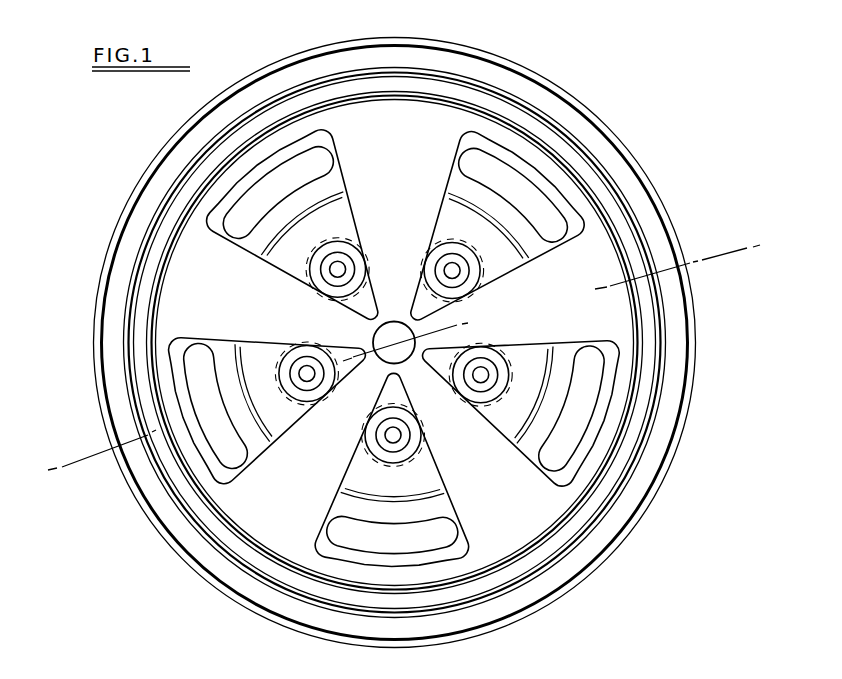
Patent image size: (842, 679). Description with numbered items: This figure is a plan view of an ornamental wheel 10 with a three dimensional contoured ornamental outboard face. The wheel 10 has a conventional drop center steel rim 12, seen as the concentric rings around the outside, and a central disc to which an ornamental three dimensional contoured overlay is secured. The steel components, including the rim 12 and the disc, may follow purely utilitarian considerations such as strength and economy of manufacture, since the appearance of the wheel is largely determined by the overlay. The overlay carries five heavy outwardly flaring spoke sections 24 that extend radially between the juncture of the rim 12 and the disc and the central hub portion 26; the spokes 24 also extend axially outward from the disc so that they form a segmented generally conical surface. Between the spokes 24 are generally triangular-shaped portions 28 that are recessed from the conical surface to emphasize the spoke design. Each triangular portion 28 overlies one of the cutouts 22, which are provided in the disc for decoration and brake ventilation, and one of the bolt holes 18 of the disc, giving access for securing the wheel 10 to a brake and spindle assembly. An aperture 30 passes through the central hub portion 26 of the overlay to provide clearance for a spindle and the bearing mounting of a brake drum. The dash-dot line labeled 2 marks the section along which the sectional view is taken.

The section line 2- 2 is at (70, 455).
The ornamental wheel 10 is at (114, 218).
The drop center steel rim 12 is at (172, 515).
The bolt holes 18 is at (309, 380).
The cutouts 22 is at (572, 440).
The spoke sections 24 is at (430, 140).
The central hub portion 26 is at (410, 362).
The triangular-shaped portions 28 is at (453, 535).
The aperture 30 is at (396, 325).